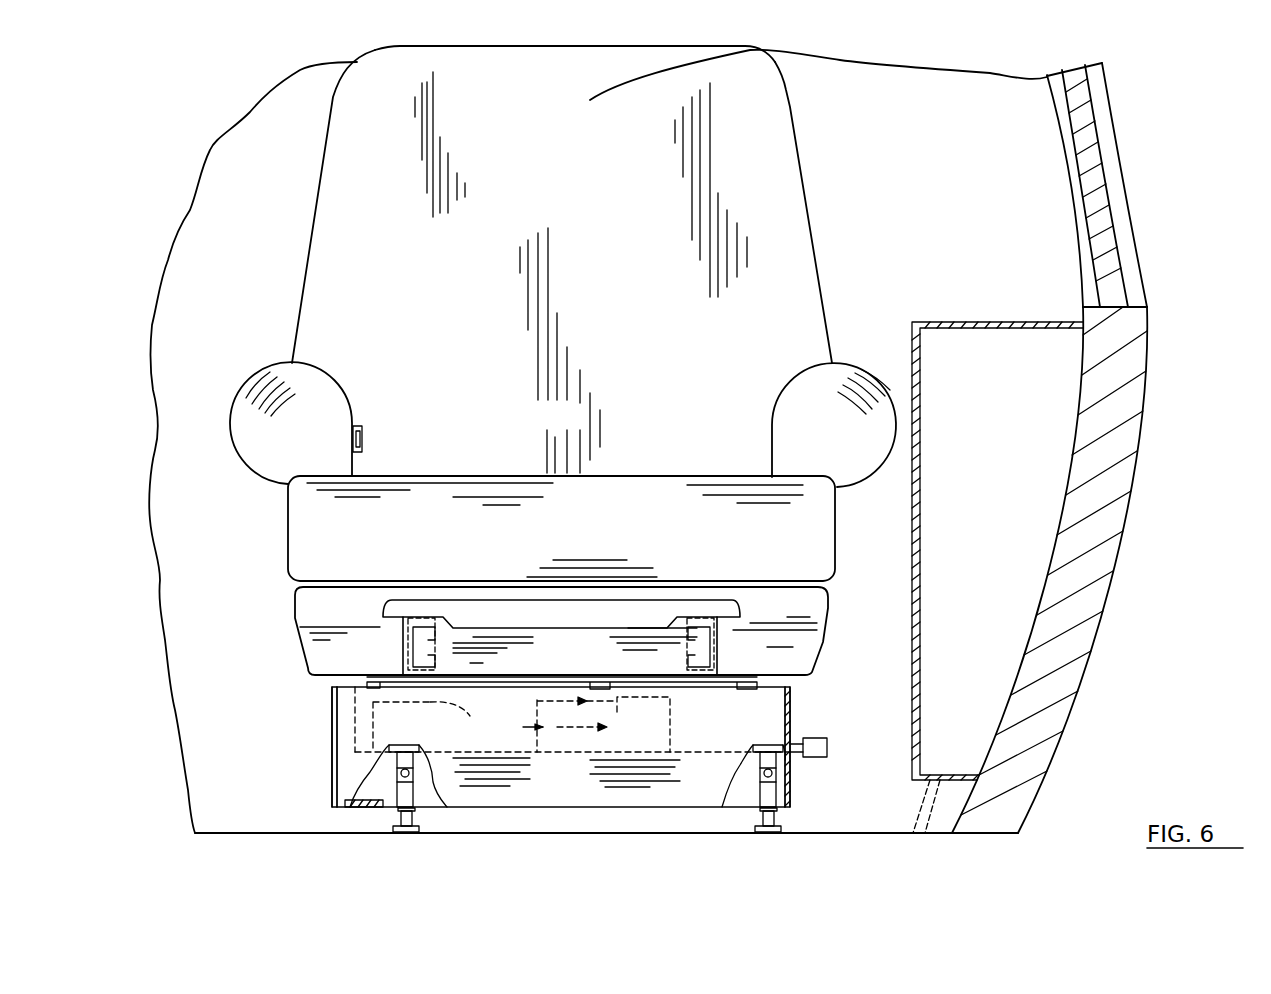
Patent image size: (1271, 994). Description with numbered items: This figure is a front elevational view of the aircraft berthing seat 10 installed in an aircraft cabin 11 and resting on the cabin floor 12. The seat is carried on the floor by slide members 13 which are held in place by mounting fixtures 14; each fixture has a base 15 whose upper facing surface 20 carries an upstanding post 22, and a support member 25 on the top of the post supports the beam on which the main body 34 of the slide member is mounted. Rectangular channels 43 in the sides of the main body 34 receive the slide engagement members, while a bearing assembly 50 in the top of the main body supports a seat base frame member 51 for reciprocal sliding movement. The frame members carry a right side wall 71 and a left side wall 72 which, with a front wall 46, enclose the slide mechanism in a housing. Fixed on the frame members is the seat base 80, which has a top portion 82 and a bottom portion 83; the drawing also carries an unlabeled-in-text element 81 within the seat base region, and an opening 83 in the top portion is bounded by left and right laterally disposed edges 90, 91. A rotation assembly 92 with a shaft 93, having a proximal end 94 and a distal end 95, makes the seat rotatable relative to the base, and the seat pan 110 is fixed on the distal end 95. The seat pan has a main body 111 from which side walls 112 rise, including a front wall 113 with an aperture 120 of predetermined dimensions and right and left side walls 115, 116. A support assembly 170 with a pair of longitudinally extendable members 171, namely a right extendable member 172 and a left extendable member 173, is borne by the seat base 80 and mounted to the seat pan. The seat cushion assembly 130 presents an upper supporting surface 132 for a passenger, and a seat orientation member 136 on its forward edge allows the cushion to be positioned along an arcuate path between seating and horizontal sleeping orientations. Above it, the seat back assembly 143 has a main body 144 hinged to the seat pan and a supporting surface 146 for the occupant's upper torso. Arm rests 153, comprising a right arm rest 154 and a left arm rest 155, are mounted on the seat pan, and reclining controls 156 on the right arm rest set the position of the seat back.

The aircraft berthing seat 10 is at (874, 219).
The aircraft cabin 11 is at (1050, 246).
The cabin floor 12 is at (242, 833).
The slide member 13 is at (380, 782).
The mounting fixture 14 is at (800, 823).
The base 15 is at (420, 828).
The upper facing surface 20 is at (392, 828).
The post 22 is at (757, 812).
The support member 25 is at (773, 810).
The main body 34 is at (792, 772).
The rectangular-shaped channel 43 is at (757, 773).
The front wall 46 is at (618, 793).
The bearing assembly 50 is at (398, 767).
The seat base frame member 51 is at (410, 760).
The right side wall 71 is at (330, 710).
The left side wall 72 is at (803, 697).
The seat base 80 is at (513, 765).
The air flow passage 81 is at (549, 731).
The top portion 82 is at (392, 719).
The bottom portion 83 is at (450, 692).
The left laterally disposed edge 90 is at (465, 715).
The right laterally disposed edge 91 is at (667, 700).
The rotation assembly 92 is at (740, 733).
The shaft 93 is at (617, 677).
The proximal end 94 is at (557, 722).
The distal end 95 is at (593, 677).
The seat pan 110 is at (826, 646).
The main body 111 is at (293, 613).
The side walls 112 is at (295, 617).
The front wall 113 is at (788, 600).
The right side wall 115 is at (295, 630).
The left side wall 116 is at (828, 610).
The aperture 120 is at (348, 603).
The seat cushion assembly 130 is at (626, 466).
The upper supporting surface 132 is at (525, 477).
The seat orientation member 136 is at (553, 542).
The seat back assembly 143 is at (736, 144).
The main body 144 is at (363, 192).
The supporting surface 146 is at (748, 52).
The arm rests 153 is at (313, 434).
The right arm rest 154 is at (268, 387).
The left arm rest 155 is at (863, 375).
The reclining controls 156 is at (363, 430).
The support assembly 170 is at (445, 640).
The longitudinally extendable members 171 is at (440, 590).
The right extendable member 172 is at (412, 617).
The left extendable member 173 is at (715, 617).